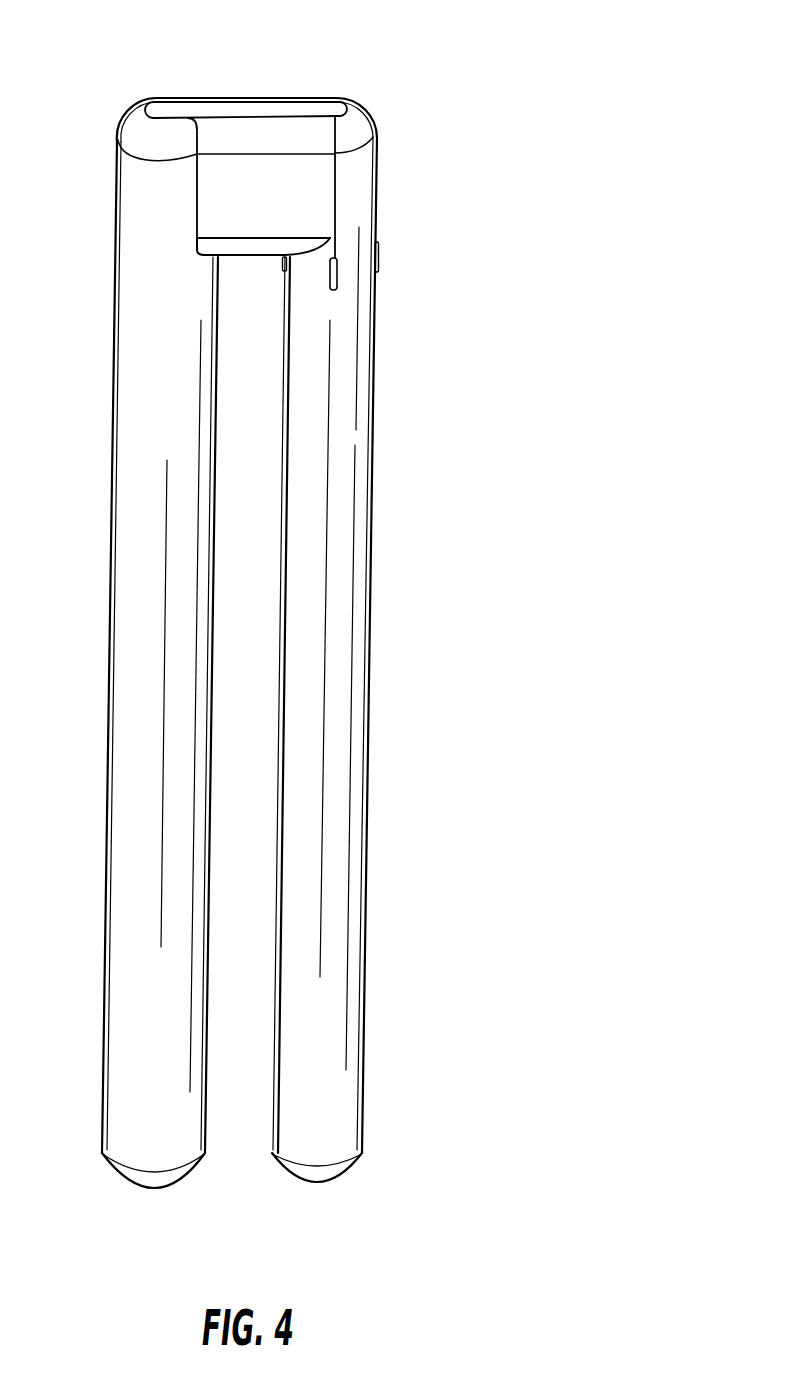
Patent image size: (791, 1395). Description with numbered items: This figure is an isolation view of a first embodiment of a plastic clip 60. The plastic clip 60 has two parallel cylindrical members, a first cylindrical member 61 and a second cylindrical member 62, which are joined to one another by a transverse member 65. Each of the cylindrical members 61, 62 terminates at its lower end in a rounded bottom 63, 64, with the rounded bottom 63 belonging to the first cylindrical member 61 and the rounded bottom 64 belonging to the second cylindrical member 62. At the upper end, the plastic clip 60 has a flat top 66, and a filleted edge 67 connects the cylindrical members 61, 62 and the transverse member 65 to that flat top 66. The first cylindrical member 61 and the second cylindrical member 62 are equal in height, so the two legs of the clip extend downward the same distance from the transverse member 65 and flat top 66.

The plastic clip 60 is at (243, 627).
The first cylindrical member 61 is at (120, 618).
The second cylindrical member 62 is at (360, 618).
The rounded bottom 63 is at (153, 1188).
The rounded bottom 64 is at (315, 1182).
The transverse member 65 is at (263, 208).
The flat top 66 is at (230, 113).
The filleted edge 67 is at (136, 128).